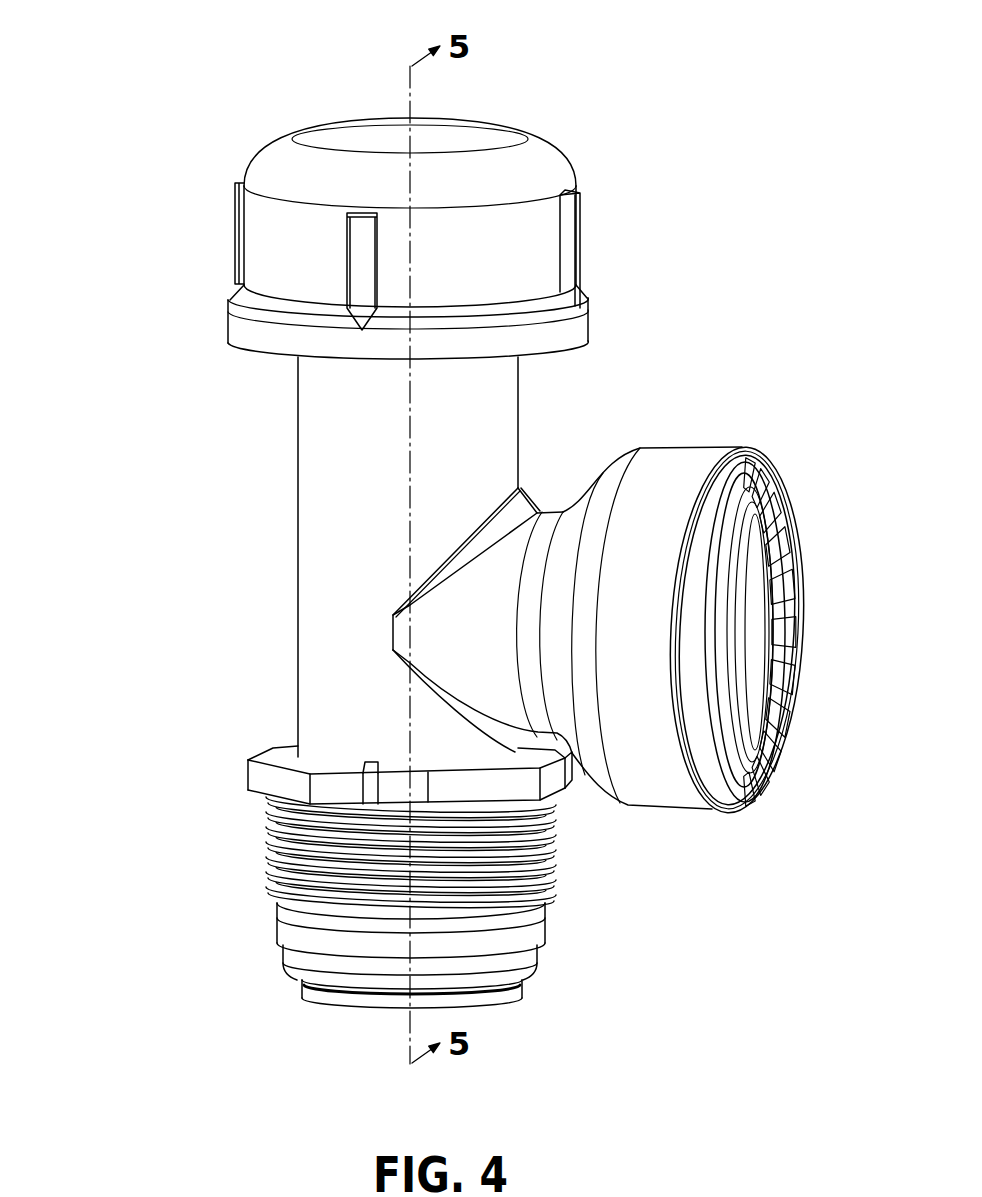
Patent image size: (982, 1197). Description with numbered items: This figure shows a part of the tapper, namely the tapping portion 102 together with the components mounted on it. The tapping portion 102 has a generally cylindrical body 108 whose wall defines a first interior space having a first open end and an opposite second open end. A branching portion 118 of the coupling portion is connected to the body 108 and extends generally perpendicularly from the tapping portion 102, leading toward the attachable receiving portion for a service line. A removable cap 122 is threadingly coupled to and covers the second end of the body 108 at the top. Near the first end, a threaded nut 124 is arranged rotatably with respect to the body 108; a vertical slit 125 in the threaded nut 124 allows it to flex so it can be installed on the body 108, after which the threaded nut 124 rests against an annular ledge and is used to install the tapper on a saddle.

The tapping portion 102 is at (150, 376).
The body 108 is at (345, 493).
The branching portion 118 is at (670, 473).
The removable cap 122 is at (532, 157).
The threaded nut 124 is at (540, 853).
The vertical slit 125 is at (260, 725).